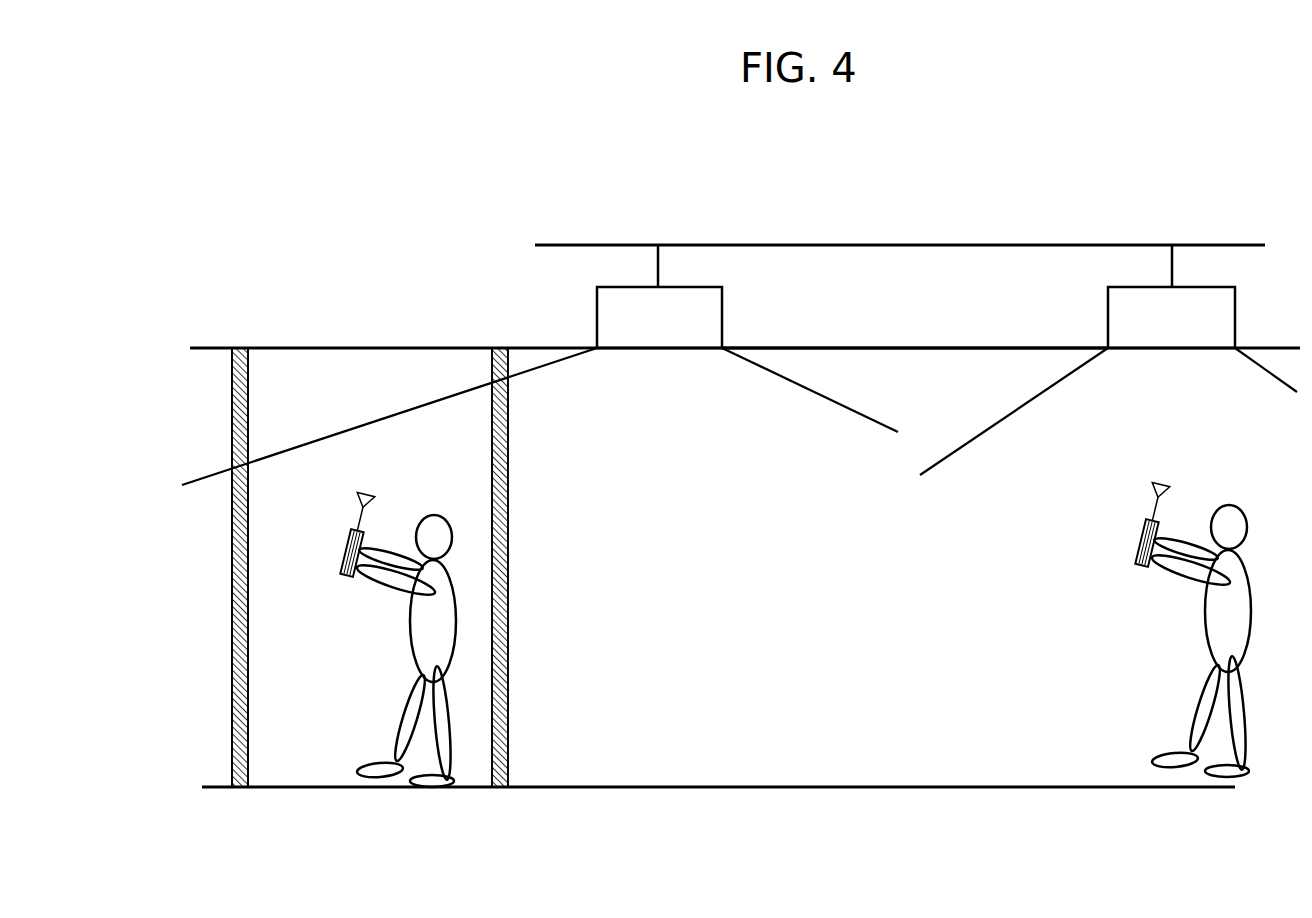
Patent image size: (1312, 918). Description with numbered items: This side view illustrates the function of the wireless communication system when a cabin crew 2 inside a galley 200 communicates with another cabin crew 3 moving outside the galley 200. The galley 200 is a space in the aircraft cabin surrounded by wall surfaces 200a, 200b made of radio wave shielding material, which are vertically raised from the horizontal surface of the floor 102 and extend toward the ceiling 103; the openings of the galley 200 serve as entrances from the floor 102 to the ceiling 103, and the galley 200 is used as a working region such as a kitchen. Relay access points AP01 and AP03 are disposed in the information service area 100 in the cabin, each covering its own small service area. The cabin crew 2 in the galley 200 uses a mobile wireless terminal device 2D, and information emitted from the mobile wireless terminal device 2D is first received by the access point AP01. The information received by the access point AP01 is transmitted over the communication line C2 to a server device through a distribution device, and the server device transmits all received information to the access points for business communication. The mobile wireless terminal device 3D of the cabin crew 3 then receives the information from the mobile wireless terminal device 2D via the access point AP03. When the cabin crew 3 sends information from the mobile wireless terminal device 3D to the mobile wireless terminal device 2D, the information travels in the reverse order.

The information service area 100 is at (962, 380).
The floor 102 is at (927, 792).
The ceiling 103 is at (842, 348).
The galley 200 is at (348, 370).
The wall surface 200a is at (500, 348).
The wall surface 200b is at (240, 348).
The cabin crew 2 is at (434, 525).
The mobile wireless terminal device 2D is at (348, 542).
The cabin crew 3 is at (1206, 616).
The mobile wireless terminal device 3D is at (1131, 523).
The communication line C2 is at (1035, 245).
The access point AP01 is at (540, 386).
The access point AP03 is at (1108, 381).